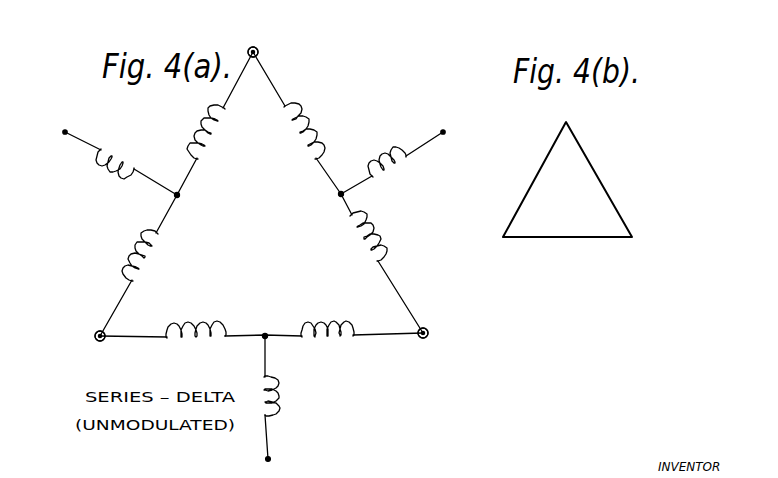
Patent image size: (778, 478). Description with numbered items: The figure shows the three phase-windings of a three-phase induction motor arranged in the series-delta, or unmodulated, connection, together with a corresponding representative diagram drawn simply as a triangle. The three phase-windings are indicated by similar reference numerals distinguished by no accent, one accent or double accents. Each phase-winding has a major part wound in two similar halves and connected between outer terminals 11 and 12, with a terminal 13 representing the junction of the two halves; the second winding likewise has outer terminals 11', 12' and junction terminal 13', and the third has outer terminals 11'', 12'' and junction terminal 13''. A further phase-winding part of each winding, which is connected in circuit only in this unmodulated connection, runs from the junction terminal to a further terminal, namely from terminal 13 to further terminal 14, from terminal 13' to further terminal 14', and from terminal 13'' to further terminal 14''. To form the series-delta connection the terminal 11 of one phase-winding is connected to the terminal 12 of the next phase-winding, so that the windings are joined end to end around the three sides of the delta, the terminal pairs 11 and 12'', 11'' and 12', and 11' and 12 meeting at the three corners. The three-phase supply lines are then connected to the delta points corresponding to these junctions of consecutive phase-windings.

The outer terminal 11 is at (272, 52).
The outer terminal 12 is at (435, 320).
The terminal 13 is at (320, 197).
The further terminal 14 is at (393, 154).
The outer terminal 11' is at (428, 352).
The outer terminal 12' is at (119, 348).
The terminal 13' is at (266, 322).
The further terminal 14' is at (287, 403).
The outer terminal 11'' is at (88, 322).
The outer terminal 12'' is at (260, 36).
The terminal 13'' is at (199, 197).
The further terminal 14'' is at (120, 157).